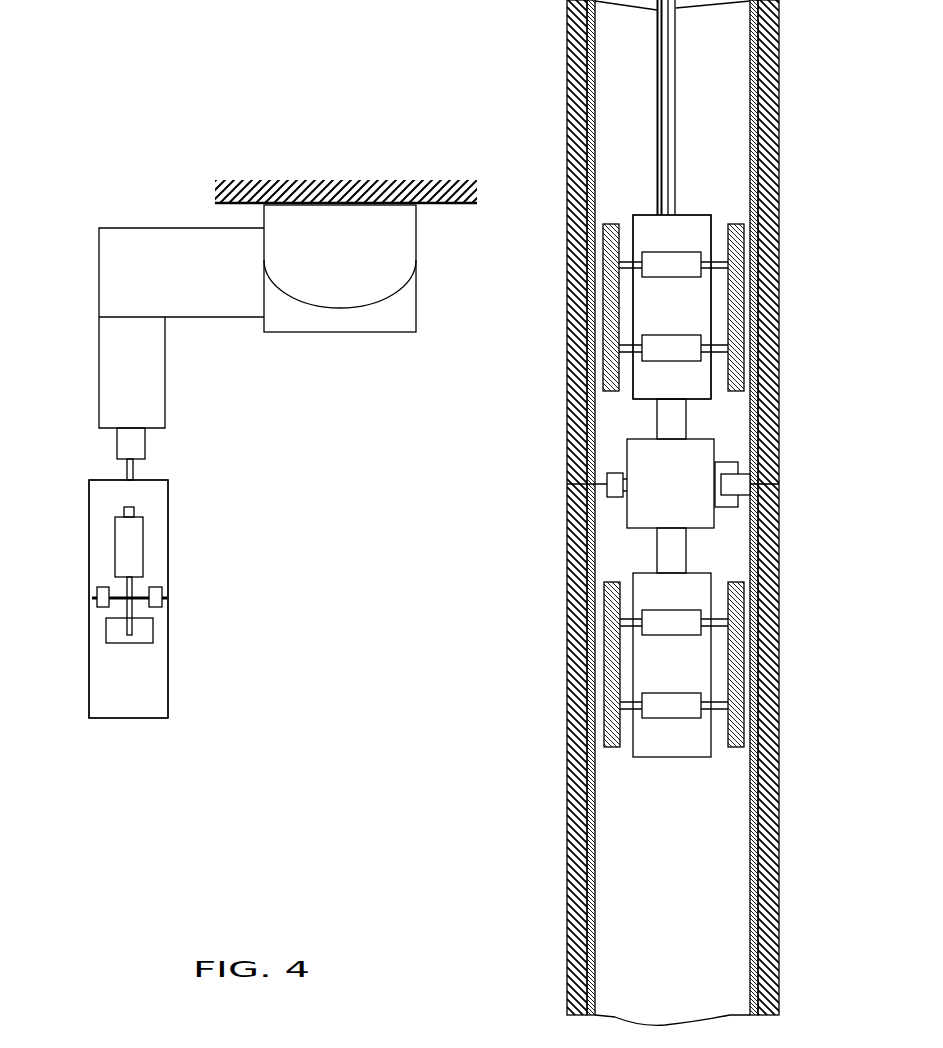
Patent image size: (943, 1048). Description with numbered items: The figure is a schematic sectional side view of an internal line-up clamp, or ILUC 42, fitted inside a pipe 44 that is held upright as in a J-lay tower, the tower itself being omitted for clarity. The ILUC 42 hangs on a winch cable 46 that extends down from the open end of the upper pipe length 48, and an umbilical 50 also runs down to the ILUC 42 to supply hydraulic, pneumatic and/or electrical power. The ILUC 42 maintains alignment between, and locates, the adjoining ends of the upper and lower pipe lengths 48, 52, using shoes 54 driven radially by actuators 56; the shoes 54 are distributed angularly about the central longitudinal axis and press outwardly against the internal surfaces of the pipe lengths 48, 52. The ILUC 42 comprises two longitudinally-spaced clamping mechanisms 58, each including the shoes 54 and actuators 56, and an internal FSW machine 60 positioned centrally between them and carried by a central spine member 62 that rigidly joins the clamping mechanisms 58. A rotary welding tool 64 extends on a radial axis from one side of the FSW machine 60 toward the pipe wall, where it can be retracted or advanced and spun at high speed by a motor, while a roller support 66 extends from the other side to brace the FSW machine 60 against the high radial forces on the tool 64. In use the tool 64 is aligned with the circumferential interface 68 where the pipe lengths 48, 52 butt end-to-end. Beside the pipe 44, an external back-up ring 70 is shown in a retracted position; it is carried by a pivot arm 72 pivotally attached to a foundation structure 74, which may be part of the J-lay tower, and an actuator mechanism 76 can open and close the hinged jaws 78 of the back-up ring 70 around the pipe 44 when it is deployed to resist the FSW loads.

The internal line-up clamp 42 is at (631, 182).
The pipe 44 is at (520, 42).
The winch cable 46 is at (670, 110).
The upper pipe length 48 is at (768, 224).
The umbilical 50 is at (657, 68).
The lower pipe length 52 is at (570, 587).
The shoes 54 is at (735, 305).
The actuators 56 is at (665, 265).
The clamping mechanisms 58 is at (645, 381).
The internal FSW machine 60 is at (684, 495).
The central spine member 62 is at (678, 560).
The rotary welding tool 64 is at (615, 485).
The roller support 66 is at (737, 483).
The circumferential interface 68 is at (605, 486).
The external back-up ring 70 is at (206, 514).
The pivot arm 72 is at (152, 355).
The foundation structure 74 is at (310, 183).
The actuator mechanism 76 is at (127, 543).
The hinged jaws 78 is at (100, 537).